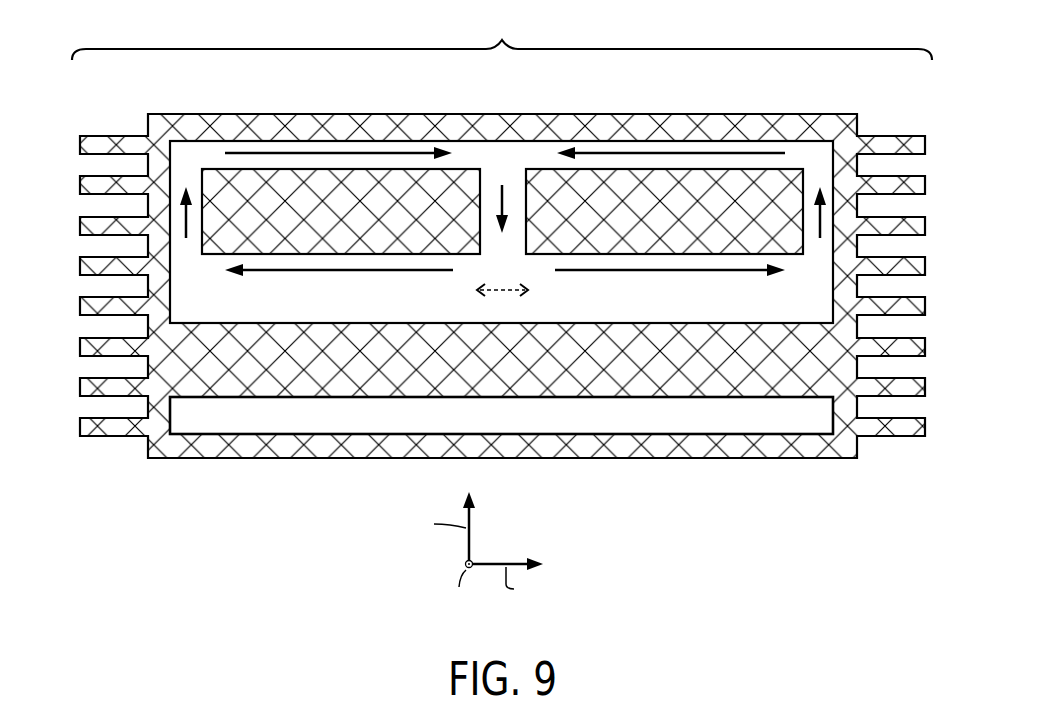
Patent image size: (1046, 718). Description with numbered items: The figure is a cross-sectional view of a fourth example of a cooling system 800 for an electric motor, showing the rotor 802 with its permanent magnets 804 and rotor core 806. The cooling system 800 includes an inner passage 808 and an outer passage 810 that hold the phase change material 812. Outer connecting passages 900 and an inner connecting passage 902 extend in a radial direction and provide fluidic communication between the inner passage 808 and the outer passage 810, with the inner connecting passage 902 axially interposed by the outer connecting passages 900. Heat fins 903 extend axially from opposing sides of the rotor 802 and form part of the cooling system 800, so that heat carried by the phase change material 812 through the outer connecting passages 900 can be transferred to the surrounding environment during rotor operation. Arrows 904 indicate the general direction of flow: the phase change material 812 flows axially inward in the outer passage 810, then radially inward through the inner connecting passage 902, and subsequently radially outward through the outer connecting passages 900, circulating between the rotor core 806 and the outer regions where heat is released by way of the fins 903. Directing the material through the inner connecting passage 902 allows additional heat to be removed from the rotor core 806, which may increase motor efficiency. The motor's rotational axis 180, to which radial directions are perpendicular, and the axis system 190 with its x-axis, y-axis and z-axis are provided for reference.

The rotor 802 is at (502, 37).
The cooling system 800 is at (501, 260).
The heat fins 903 is at (80, 146).
The phase change material 812 is at (216, 152).
The outer passage 810 is at (336, 136).
The inner passage 808 is at (393, 330).
The rotor core 806 is at (495, 367).
The permanent magnets 804 is at (748, 425).
The arrows 904 is at (288, 155).
The inner connecting passage 902 is at (521, 175).
The outer connecting passages 900 is at (160, 181).
The rotational axis 180 is at (503, 293).
The axis system 190 is at (511, 523).